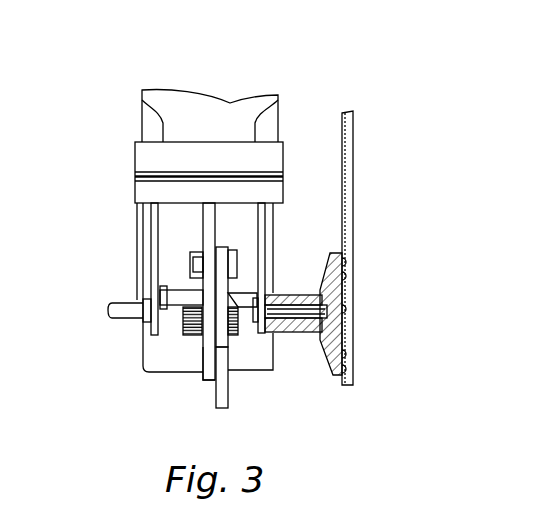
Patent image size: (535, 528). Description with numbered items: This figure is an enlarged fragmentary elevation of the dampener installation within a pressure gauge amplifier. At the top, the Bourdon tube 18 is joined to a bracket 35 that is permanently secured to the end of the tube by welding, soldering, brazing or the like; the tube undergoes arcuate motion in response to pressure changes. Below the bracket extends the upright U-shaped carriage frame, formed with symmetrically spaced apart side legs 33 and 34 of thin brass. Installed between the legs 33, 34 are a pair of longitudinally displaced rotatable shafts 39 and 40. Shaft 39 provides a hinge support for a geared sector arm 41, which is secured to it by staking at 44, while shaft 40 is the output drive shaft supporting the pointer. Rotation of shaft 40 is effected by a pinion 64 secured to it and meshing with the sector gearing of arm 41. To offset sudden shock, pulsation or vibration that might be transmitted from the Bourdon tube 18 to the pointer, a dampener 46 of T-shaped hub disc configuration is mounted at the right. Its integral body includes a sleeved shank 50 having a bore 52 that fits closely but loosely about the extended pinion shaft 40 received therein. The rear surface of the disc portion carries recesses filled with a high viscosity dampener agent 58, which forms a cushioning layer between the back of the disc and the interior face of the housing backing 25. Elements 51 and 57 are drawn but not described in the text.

The Bourdon tube 18 is at (232, 104).
The backing 25 is at (354, 160).
The side leg 33 is at (151, 228).
The side leg 34 is at (266, 222).
The bracket 35 is at (284, 181).
The shaft 39 is at (170, 292).
The shaft 40 is at (118, 303).
The geared sector arm 41 is at (206, 362).
The staking 44 is at (197, 284).
The dampener 46 is at (322, 252).
The sleeved shank 50 is at (230, 400).
The bar 51 is at (205, 244).
The bore 52 is at (330, 308).
The plate 57 is at (220, 248).
The dampener agent 58 is at (290, 295).
The pinion 64 is at (190, 335).